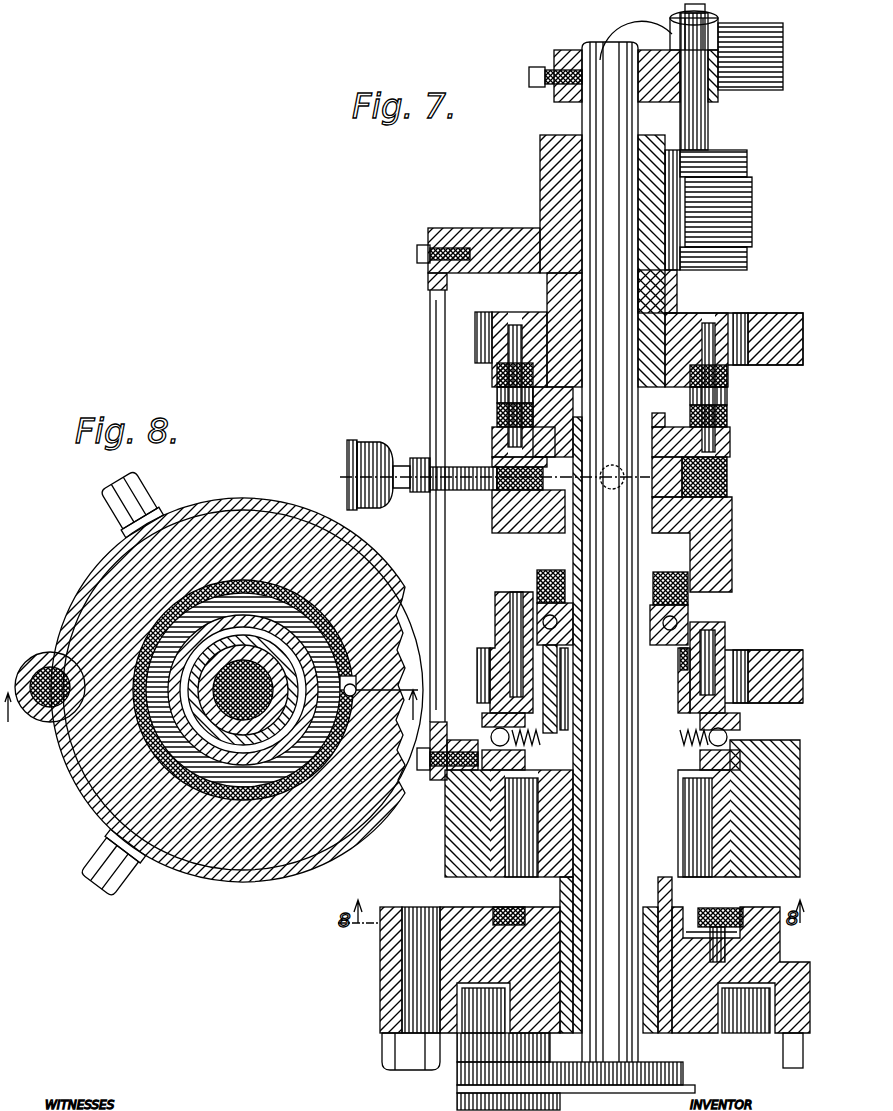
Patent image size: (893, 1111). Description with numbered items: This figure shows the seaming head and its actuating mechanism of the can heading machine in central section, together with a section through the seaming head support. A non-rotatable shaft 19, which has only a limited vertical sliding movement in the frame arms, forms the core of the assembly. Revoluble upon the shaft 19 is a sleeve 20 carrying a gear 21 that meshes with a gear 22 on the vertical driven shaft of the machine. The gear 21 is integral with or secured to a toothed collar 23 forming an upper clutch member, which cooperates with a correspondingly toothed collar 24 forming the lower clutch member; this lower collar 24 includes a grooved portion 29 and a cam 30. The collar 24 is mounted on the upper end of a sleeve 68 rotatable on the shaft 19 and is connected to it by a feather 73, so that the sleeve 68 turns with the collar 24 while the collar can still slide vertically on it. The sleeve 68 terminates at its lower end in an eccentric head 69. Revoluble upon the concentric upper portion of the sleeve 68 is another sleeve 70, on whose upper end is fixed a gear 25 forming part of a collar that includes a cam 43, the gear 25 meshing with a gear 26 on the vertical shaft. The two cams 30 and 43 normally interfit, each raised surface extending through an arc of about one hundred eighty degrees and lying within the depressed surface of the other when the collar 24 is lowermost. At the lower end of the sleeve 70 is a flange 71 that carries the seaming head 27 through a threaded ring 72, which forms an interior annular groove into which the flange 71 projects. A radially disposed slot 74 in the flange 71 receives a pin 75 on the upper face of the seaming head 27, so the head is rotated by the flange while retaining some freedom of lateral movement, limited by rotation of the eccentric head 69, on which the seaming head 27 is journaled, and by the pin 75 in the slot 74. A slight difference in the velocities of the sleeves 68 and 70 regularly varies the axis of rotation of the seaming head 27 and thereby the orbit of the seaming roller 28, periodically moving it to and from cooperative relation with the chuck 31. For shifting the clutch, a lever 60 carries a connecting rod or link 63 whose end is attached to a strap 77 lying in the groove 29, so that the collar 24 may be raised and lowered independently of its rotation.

In FIG. 7, the shaft 19 is at (585, 112).
In FIG. 8, the shaft 19 is at (380, 557).
In FIG. 7, the lever 60 is at (766, 94).
In FIG. 7, the connecting rod or link 63 is at (540, 177).
In FIG. 7, the sleeve 20 is at (547, 288).
In FIG. 7, the gear 21 is at (483, 310).
In FIG. 7, the gear 22 is at (795, 312).
In FIG. 7, the toothed collar 23 is at (497, 373).
In FIG. 7, the toothed collar 24 is at (497, 412).
In FIG. 7, the grooved portion 29 is at (727, 462).
In FIG. 7, the strap 77 is at (727, 487).
In FIG. 7, the cam 30 is at (728, 553).
In FIG. 7, the feather 73 is at (568, 540).
In FIG. 7, the cam 43 is at (497, 607).
In FIG. 7, the gear 25 is at (490, 664).
In FIG. 7, the gear 26 is at (790, 650).
In FIG. 7, the sleeve 68 is at (550, 768).
In FIG. 7, the seaming head 27 is at (405, 908).
In FIG. 8, the seaming head 27 is at (245, 770).
In FIG. 7, the flange 71 is at (510, 908).
In FIG. 8, the flange 71 is at (245, 612).
In FIG. 7, the radially-disposed slot 74 is at (700, 930).
In FIG. 8, the radially-disposed slot 74 is at (350, 680).
In FIG. 7, the sleeve 70 is at (670, 865).
In FIG. 8, the sleeve 70 is at (253, 610).
In FIG. 7, the threaded ring 72 is at (737, 912).
In FIG. 7, the pin 75 is at (742, 930).
In FIG. 8, the pin 75 is at (358, 695).
In FIG. 7, the eccentric head 69 is at (680, 1015).
In FIG. 8, the eccentric head 69 is at (270, 725).
In FIG. 7, the chuck 31 is at (697, 1077).
In FIG. 7, the roller 28 is at (445, 1073).
In FIG. 8, the roller 28 is at (76, 568).